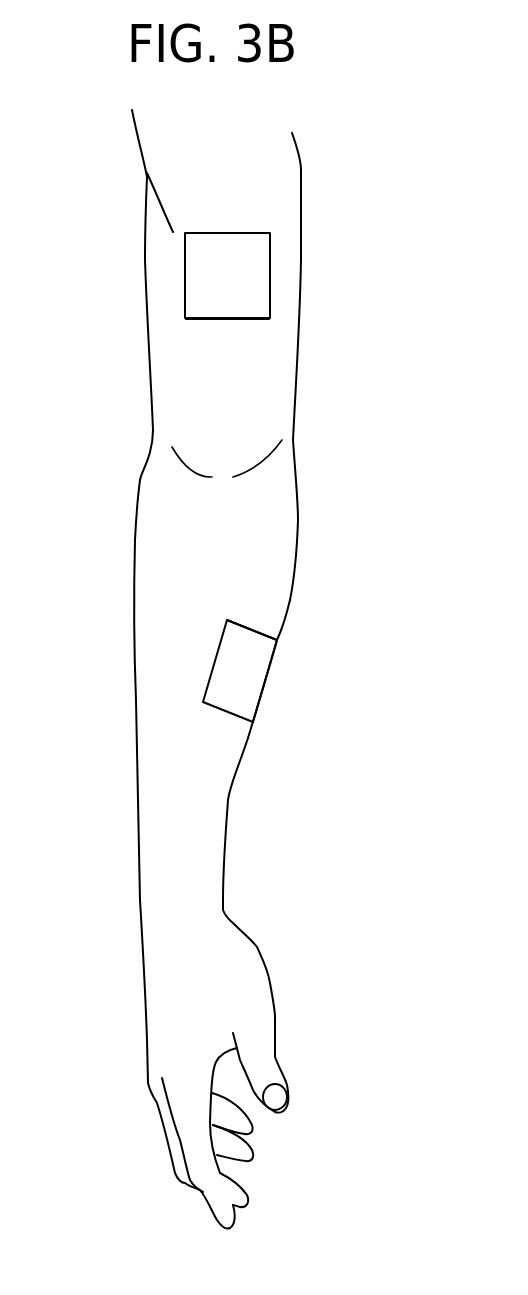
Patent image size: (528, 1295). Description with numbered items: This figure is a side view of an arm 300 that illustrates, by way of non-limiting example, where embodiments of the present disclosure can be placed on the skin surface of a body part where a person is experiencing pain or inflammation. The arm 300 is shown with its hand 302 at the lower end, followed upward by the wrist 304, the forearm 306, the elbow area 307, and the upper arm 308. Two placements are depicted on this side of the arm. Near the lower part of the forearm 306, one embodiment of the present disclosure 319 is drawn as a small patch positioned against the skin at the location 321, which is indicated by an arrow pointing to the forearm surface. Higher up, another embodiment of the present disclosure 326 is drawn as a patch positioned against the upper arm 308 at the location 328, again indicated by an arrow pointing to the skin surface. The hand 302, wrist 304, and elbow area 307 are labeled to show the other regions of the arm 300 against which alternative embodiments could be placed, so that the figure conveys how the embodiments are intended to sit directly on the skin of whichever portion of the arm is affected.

The arm 300 is at (298, 819).
The hand 302 is at (160, 1064).
The wrist 304 is at (133, 806).
The forearm 306 is at (151, 639).
The elbow area 307 is at (155, 515).
The upper arm 308 is at (155, 275).
The embodiment of the present disclosure 319 is at (243, 682).
The position on lower part of forearm 321 is at (272, 613).
The embodiment of the present disclosure 326 is at (245, 270).
The position on upper arm 328 is at (248, 335).